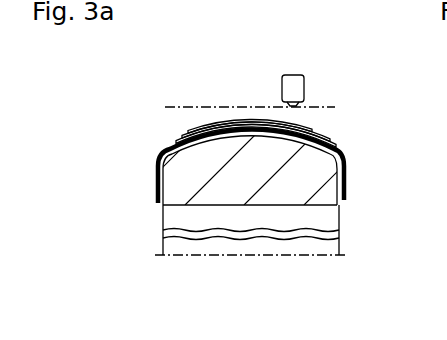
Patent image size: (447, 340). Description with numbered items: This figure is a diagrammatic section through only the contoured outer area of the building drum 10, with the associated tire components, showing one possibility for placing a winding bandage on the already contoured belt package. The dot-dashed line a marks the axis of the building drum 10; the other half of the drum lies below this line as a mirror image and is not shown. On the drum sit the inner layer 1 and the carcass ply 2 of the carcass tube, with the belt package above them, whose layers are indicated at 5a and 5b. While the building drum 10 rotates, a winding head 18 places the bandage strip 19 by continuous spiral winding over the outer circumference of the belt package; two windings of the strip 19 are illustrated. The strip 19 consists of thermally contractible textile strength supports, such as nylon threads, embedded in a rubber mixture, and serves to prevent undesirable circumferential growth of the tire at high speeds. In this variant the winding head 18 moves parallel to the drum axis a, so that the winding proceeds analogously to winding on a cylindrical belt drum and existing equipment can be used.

The inner layer 1 is at (155, 197).
The carcass ply 2 is at (157, 155).
The first coating layer 5a is at (239, 120).
The second coating layer 5b is at (187, 130).
The building drum 10 is at (157, 222).
The winding head 18 is at (292, 83).
The strip 19 is at (319, 128).
The axis a is at (192, 255).